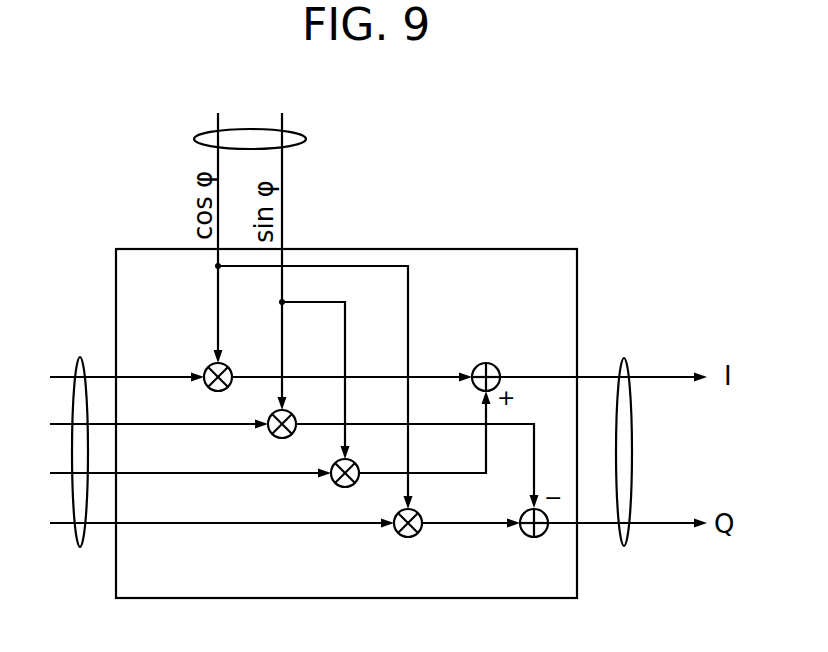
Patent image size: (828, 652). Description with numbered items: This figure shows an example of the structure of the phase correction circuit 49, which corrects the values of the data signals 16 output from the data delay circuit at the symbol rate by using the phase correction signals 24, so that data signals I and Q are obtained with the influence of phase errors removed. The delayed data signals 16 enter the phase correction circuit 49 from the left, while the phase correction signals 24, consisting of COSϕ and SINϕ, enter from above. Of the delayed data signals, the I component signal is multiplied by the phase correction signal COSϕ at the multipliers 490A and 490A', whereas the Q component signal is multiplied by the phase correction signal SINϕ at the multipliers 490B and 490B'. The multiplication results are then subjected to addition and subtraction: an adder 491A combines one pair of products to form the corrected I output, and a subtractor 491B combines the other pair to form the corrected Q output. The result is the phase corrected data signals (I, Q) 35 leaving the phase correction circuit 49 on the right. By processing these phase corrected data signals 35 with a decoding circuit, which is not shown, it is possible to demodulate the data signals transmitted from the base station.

The data signals 16 is at (78, 358).
The phase correction signals 24 is at (306, 138).
The phase corrected data signals (I, Q) 35 is at (623, 358).
The phase correction circuit 49 is at (508, 249).
The multiplier 490A is at (177, 327).
The multiplier 490A' is at (222, 436).
The multiplier 490B is at (287, 486).
The multiplier 490B' is at (455, 508).
The adder 491A is at (486, 362).
The subtractor 491B is at (545, 533).